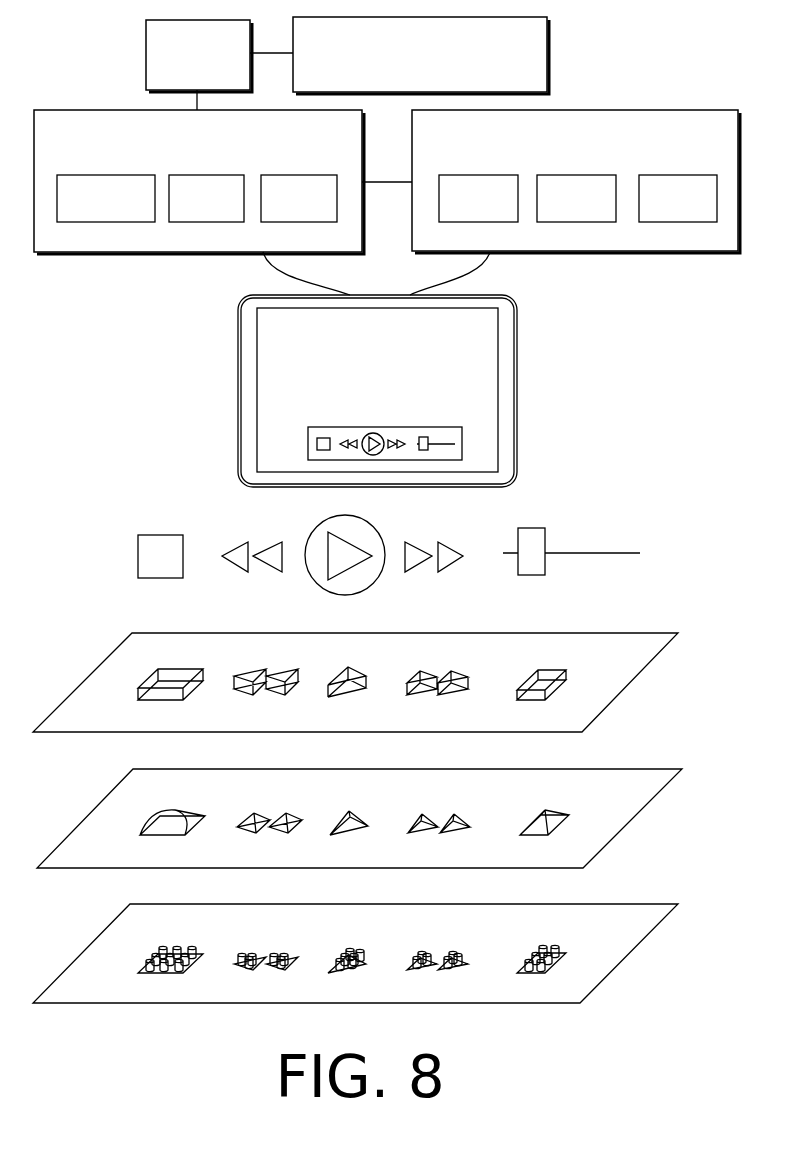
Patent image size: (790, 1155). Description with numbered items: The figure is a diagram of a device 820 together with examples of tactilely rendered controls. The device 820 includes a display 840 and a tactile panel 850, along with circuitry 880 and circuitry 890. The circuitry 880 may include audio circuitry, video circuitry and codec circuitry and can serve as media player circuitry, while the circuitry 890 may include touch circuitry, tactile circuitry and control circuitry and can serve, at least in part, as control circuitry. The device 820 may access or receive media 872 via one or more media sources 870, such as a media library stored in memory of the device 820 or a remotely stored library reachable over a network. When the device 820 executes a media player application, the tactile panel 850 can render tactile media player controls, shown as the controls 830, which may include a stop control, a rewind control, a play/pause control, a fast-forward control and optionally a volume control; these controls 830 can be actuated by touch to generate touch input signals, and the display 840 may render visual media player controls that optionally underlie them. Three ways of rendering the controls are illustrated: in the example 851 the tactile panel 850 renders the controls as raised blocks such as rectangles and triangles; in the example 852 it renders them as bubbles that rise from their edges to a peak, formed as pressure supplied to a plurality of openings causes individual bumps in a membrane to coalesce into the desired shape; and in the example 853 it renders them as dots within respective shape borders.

The media sources 870 is at (404, 75).
The media 872 is at (182, 76).
The circuitry 880 is at (243, 155).
The circuitry 890 is at (621, 155).
The device 820 is at (245, 303).
The display 840 is at (485, 362).
The tactile panel 850 is at (463, 442).
The controls 830 is at (361, 416).
The example 851 is at (608, 642).
The example 852 is at (625, 778).
The example 853 is at (620, 913).